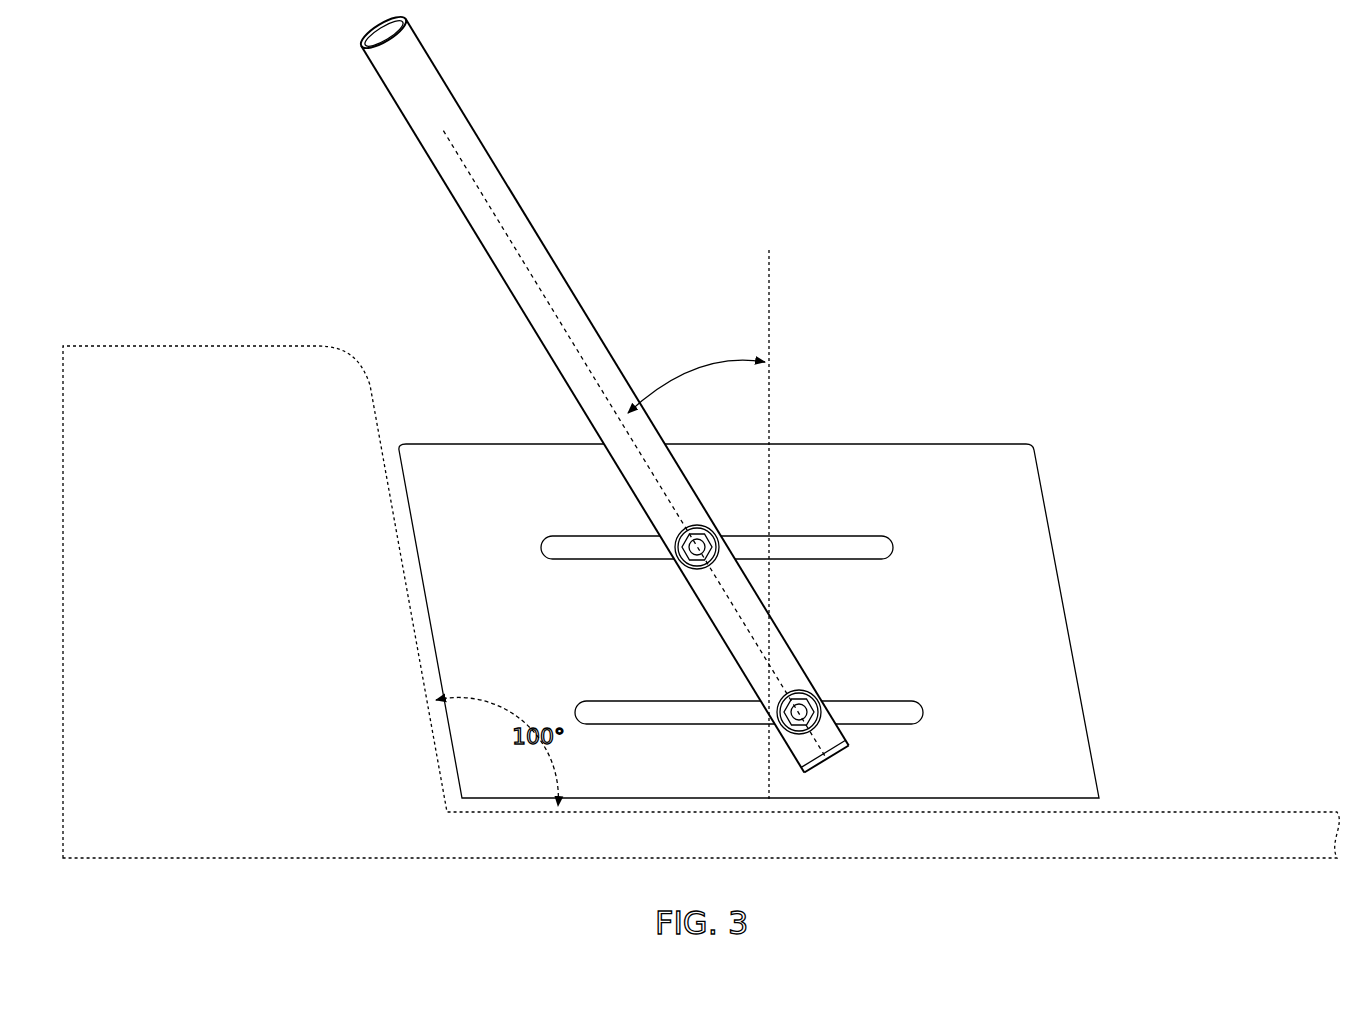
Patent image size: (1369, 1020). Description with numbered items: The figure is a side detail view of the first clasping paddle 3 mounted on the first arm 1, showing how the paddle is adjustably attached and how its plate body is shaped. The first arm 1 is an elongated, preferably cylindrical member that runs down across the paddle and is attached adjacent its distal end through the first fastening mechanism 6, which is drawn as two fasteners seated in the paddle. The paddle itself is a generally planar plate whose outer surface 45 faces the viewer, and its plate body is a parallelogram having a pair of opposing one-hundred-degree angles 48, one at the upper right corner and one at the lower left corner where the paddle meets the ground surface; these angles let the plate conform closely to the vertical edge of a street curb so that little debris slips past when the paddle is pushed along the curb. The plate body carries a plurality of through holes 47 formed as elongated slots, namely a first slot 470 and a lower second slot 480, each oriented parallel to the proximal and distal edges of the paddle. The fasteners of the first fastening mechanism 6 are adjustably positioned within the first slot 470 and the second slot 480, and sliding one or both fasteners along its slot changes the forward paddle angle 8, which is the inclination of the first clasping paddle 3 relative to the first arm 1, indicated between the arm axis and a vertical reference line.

The first arm 1 is at (555, 199).
The first clasping paddle 3 is at (1145, 548).
The first fastening mechanism 6 is at (663, 582).
The forward paddle angle 8 is at (682, 378).
The outer surface 45 is at (749, 621).
The slot 47 is at (732, 599).
The 100-degree angles 48 is at (1036, 506).
The first slot 470 is at (717, 547).
The lower slot 480 is at (749, 712).